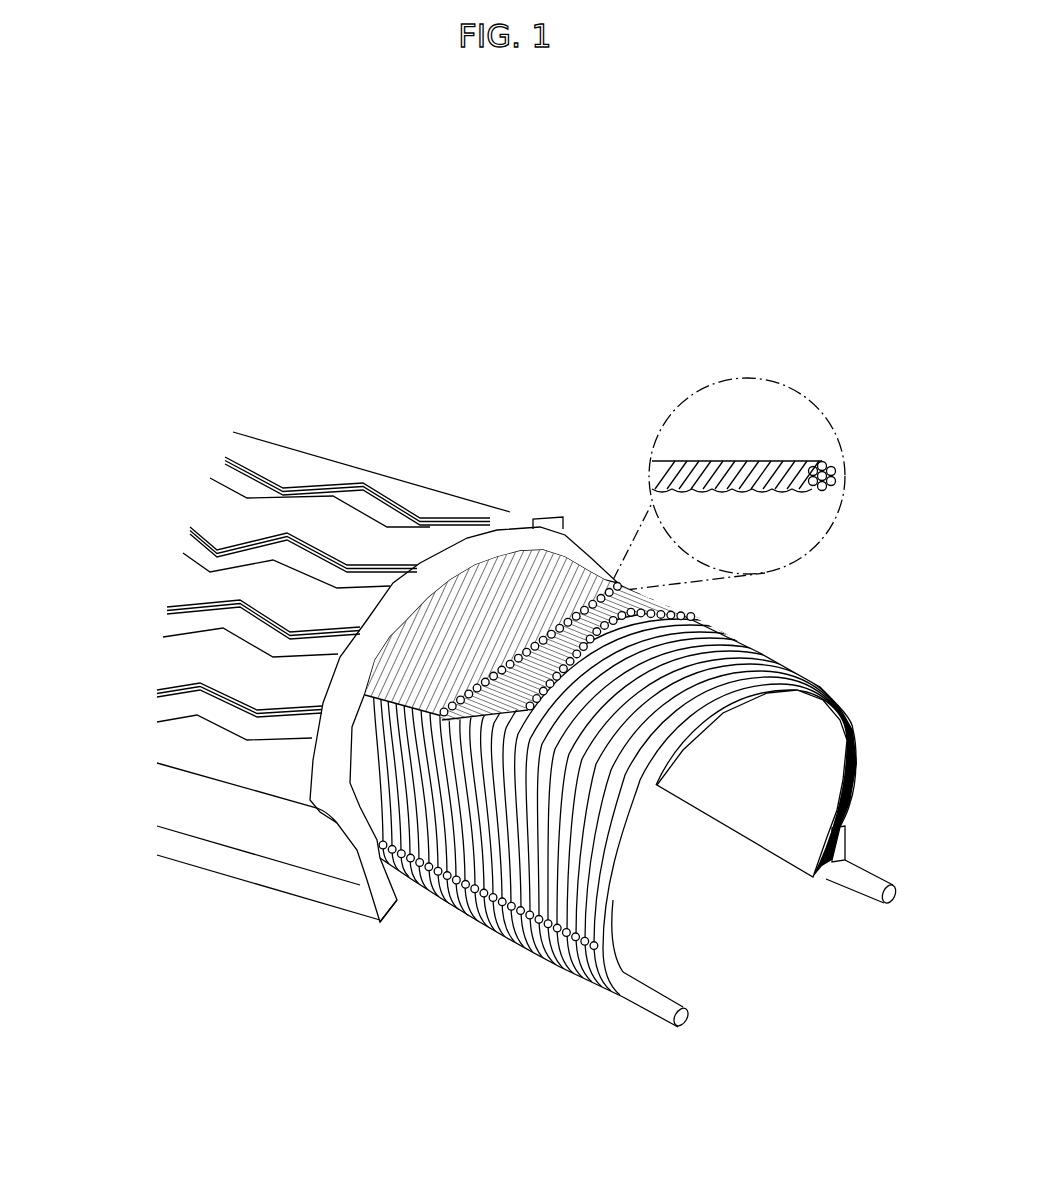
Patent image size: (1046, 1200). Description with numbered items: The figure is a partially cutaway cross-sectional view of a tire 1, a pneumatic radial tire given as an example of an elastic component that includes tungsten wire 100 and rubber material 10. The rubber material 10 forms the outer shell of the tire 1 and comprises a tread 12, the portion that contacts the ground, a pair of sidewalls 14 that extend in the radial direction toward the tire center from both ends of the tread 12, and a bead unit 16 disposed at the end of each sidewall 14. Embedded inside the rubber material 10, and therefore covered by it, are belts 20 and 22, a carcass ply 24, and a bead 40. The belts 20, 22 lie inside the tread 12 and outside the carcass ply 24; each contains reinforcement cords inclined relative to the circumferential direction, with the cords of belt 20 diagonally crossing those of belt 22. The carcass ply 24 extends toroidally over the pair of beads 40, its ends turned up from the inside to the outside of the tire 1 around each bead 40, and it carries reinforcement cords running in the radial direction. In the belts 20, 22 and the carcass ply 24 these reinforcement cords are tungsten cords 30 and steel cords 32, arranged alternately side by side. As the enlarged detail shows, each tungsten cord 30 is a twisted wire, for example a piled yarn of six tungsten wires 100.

The tire 1 is at (865, 563).
The rubber material 10 is at (280, 465).
The tread 12 is at (178, 659).
The sidewalls 14 is at (253, 833).
The bead unit 16 is at (397, 905).
The belt 20 is at (445, 585).
The belt 22 is at (543, 517).
The carcass ply 24 is at (770, 657).
The tungsten cord 30 is at (527, 585).
The steel cord 32 is at (503, 635).
The bead 40 is at (858, 897).
The tungsten wire 100 is at (740, 497).